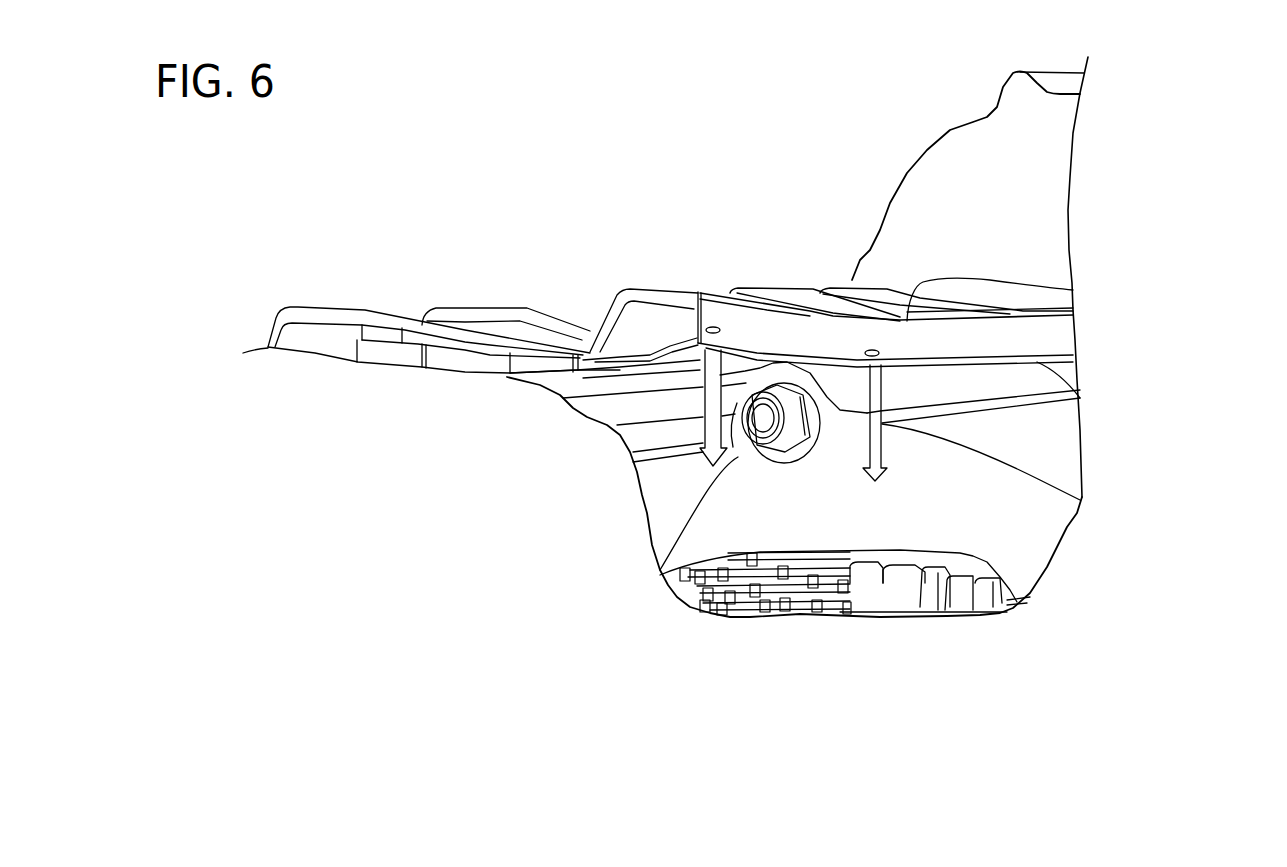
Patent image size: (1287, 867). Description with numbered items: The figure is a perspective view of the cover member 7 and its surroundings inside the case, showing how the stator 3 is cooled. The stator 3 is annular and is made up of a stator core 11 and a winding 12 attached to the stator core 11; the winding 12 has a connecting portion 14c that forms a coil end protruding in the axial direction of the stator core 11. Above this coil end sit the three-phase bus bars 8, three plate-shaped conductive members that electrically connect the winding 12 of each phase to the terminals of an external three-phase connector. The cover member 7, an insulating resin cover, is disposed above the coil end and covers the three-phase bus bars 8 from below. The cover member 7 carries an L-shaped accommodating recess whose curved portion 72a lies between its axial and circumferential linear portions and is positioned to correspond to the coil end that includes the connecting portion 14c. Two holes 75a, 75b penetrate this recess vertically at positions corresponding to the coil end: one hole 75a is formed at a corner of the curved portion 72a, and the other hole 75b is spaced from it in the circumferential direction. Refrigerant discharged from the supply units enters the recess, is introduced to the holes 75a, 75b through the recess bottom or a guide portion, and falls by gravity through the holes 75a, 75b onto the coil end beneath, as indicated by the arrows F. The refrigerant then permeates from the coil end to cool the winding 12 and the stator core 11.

The stator 3 is at (862, 336).
The cover member 7 is at (916, 288).
The three-phase bus bars 8 is at (587, 308).
The stator core 11 is at (953, 495).
The winding 12 is at (977, 580).
The connecting portion 14c is at (984, 571).
The curved portion 72a is at (1073, 292).
The hole 75a is at (866, 350).
The hole 75b is at (712, 326).
The arrows F is at (730, 430).